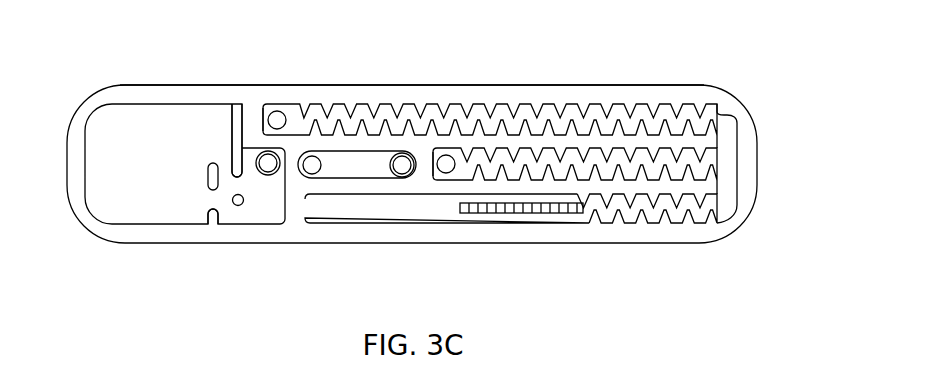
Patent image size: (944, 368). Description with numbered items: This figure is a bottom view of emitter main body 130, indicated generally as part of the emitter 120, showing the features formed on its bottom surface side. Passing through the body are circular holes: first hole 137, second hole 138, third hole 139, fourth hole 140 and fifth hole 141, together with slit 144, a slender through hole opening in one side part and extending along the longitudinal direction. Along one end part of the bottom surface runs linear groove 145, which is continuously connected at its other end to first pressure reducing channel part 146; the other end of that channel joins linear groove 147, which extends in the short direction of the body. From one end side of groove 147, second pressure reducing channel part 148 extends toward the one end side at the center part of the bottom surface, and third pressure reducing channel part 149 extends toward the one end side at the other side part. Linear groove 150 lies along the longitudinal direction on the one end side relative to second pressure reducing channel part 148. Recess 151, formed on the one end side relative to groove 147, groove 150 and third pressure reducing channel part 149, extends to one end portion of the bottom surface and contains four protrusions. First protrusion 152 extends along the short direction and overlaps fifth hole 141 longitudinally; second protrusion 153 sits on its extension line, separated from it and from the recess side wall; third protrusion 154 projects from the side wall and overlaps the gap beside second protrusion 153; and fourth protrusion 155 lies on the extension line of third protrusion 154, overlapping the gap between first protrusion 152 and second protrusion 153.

The sensor device 120 is at (773, 90).
The emitter main body 130 is at (119, 85).
The recess 151 is at (162, 104).
The first protrusion 152 is at (232, 116).
The fourth protrusion 155 is at (206, 186).
The third protrusion 154 is at (208, 213).
The second protrusion 153 is at (242, 207).
The fifth hole 141 is at (269, 176).
The fourth hole 140 is at (266, 104).
The third pressure reducing channel part 149 is at (473, 104).
The second pressure reducing channel part 148 is at (549, 143).
The first hole 137 is at (448, 173).
The linear groove 150 is at (376, 179).
The third hole 139 is at (312, 151).
The second hole 138 is at (401, 153).
The linear groove 145 is at (333, 224).
The first pressure reducing channel part 146 is at (652, 224).
The slit 144 is at (514, 214).
The linear groove 147 is at (733, 208).